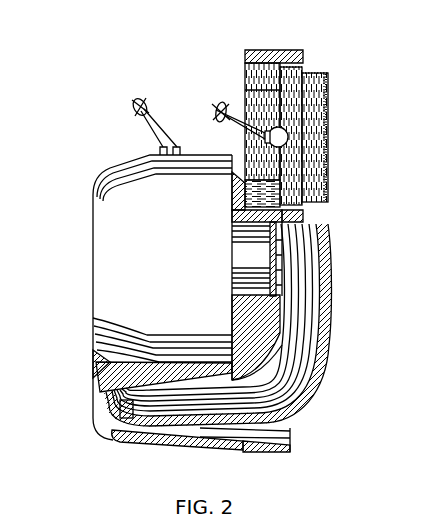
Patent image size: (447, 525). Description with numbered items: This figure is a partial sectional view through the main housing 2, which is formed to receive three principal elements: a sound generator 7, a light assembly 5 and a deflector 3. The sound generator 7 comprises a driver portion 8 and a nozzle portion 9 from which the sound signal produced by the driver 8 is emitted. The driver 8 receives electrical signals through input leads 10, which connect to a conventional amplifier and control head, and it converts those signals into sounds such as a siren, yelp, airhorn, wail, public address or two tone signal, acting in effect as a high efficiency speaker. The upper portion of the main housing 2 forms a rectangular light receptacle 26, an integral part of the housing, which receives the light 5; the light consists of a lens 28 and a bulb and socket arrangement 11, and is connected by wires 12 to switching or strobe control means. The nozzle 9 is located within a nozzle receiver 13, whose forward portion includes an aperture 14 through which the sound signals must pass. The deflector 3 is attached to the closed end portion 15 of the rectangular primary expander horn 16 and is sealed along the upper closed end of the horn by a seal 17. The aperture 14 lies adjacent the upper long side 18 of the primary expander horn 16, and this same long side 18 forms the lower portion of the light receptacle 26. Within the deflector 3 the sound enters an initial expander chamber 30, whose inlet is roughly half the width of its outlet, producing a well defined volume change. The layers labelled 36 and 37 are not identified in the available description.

The main housing 2 is at (301, 103).
The deflector 3 is at (248, 353).
The light assembly 5 is at (328, 107).
The sound generator 7 is at (150, 134).
The driver portion 8 is at (90, 250).
The nozzle portion 9 is at (235, 287).
The input leads 10 is at (146, 98).
The bulb and socket arrangement 11 is at (288, 138).
The wires 12 is at (219, 101).
The nozzle receiver 13 is at (232, 222).
The aperture 14 is at (283, 248).
The closed end portion 15 is at (140, 440).
The primary expander horn 16 is at (290, 432).
The seal 17 is at (281, 305).
The upper long side 18 is at (302, 217).
The light receptacle 26 is at (245, 72).
The lens 28 is at (328, 80).
The initial expander chamber 30 is at (297, 317).
The seal layer 36 is at (240, 380).
The sealing block 37 is at (258, 330).